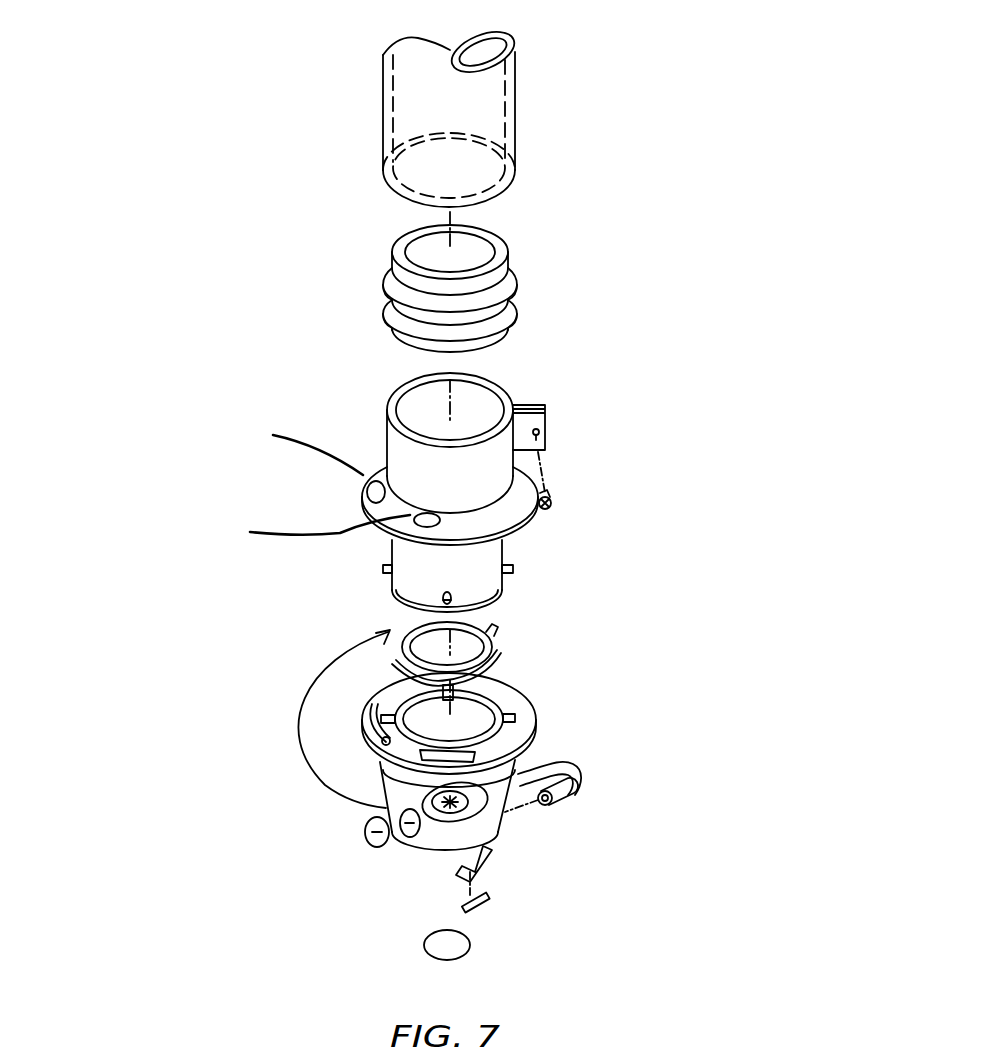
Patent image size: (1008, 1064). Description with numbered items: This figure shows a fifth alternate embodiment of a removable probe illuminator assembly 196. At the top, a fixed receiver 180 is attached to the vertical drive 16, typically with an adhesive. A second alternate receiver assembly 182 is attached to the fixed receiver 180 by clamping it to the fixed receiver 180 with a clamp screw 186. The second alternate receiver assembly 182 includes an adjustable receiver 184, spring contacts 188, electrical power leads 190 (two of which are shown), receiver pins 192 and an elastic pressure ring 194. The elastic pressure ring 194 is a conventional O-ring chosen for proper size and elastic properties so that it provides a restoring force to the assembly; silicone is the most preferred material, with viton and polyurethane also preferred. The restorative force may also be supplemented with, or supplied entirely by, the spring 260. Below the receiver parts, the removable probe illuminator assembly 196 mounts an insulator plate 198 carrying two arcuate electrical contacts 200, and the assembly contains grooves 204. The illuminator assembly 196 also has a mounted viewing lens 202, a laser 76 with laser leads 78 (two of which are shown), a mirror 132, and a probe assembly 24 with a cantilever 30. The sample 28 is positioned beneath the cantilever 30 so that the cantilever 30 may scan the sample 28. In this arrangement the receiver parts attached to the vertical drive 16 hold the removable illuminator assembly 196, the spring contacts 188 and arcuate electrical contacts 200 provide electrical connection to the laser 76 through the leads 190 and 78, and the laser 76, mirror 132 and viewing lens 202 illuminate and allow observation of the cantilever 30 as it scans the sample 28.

The vertical drive 16 is at (520, 105).
The fixed receiver 180 is at (540, 280).
The second alternate receiver assembly 182 is at (528, 455).
The adjustable receiver 184 is at (385, 448).
The clamp screw 186 is at (560, 508).
The spring contacts 188 is at (378, 512).
The electrical power leads 190 is at (243, 530).
The receiver pins 192 is at (400, 570).
The elastic pressure ring 194 is at (460, 619).
The spring 260 is at (493, 645).
The insulator plate 198 is at (537, 732).
The arcuate electrical contacts 200 is at (385, 740).
The grooves 204 is at (453, 688).
The removable probe illuminator assembly 196 is at (545, 825).
The viewing lens 202 is at (470, 812).
The mirror 132 is at (355, 832).
The laser leads 78 is at (573, 760).
The laser 76 is at (560, 800).
The cantilever 30 is at (458, 913).
The probe assembly 24 is at (490, 907).
The sample 28 is at (472, 953).